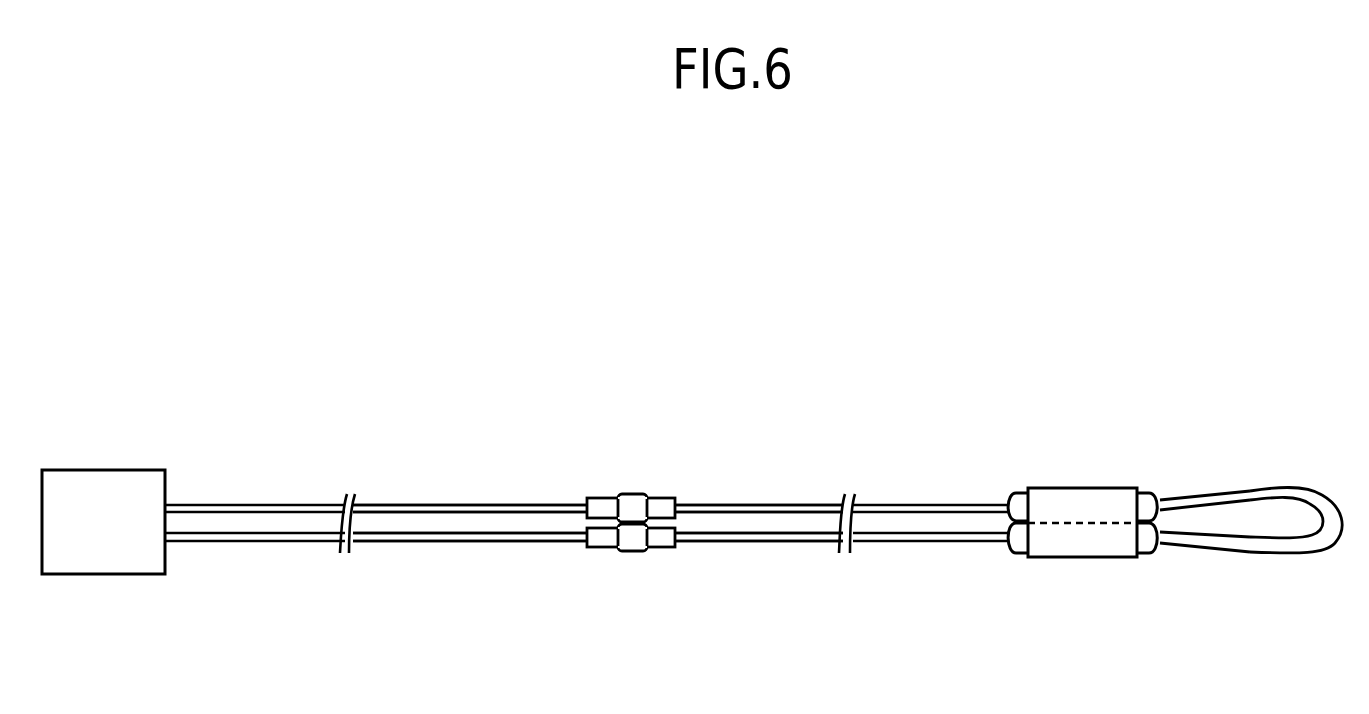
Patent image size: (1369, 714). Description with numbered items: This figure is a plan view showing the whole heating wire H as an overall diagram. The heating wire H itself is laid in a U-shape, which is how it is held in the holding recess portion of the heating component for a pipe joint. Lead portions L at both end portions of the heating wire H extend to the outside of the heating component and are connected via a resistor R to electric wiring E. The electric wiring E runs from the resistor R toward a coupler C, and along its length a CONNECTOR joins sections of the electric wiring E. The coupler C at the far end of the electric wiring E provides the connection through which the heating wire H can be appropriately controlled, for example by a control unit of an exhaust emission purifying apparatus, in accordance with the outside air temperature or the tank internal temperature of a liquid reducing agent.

The coupler C is at (90, 577).
The electric wiring E is at (520, 540).
The connector CONNECTOR is at (643, 540).
The resistor R is at (1110, 540).
The lead portions L is at (1217, 540).
The heating wire H is at (1305, 490).